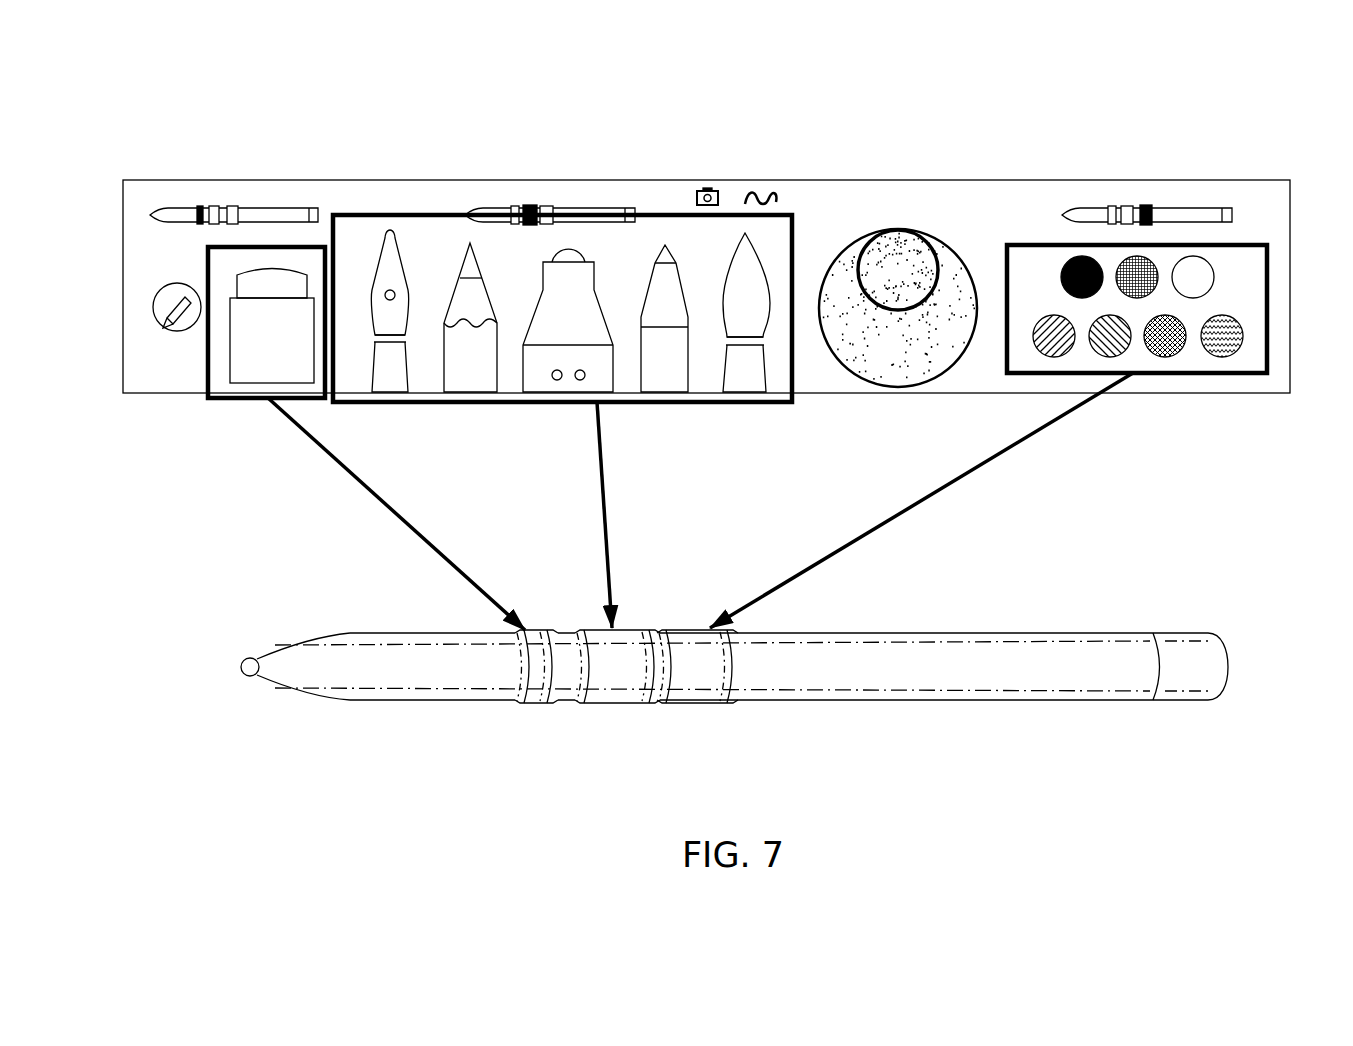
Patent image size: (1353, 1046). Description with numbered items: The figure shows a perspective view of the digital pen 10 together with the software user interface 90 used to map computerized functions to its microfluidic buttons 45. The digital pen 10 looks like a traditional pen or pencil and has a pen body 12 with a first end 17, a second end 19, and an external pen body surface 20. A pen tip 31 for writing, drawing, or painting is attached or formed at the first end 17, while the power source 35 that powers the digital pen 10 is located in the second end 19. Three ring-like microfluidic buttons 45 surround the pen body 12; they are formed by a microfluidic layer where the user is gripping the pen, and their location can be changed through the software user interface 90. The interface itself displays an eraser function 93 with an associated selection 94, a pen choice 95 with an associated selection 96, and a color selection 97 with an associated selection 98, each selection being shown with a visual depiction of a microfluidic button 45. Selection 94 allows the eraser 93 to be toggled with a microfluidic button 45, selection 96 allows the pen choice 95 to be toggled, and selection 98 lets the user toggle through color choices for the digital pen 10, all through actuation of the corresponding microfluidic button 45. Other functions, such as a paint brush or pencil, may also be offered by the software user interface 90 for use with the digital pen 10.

The software user interface 90 is at (157, 112).
The eraser function 93 is at (235, 399).
The selection 94 is at (252, 207).
The pen choice 95 is at (505, 403).
The selection 96 is at (565, 207).
The color selection 97 is at (1188, 374).
The selection 98 is at (1164, 207).
The digital pen 10 is at (752, 687).
The pen body 12 is at (998, 701).
The first end 17 is at (277, 632).
The second end 19 is at (1238, 670).
The external pen body surface 20 is at (992, 600).
The pen tip 31 is at (241, 665).
The power source 35 is at (1186, 633).
The microfluidic buttons 45 is at (537, 703).